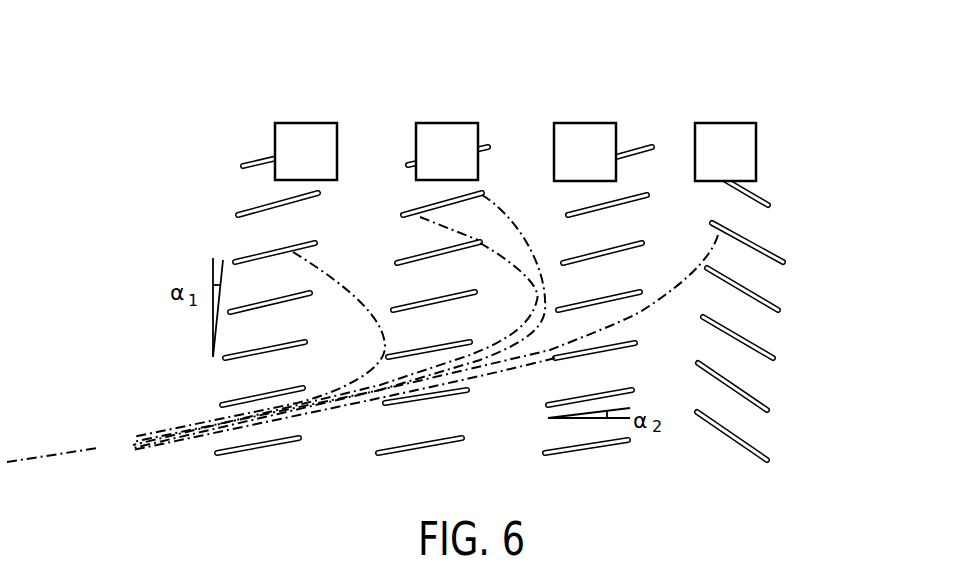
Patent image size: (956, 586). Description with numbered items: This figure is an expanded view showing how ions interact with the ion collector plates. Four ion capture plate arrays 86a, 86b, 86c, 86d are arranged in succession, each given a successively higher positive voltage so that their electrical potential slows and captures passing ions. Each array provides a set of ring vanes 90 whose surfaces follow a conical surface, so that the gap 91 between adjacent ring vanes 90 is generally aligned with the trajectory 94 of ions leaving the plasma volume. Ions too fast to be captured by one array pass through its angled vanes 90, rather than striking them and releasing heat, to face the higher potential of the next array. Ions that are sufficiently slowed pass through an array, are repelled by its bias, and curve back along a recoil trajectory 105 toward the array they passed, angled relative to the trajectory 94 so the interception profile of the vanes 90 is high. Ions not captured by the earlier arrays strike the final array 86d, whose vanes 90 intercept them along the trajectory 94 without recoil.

The ion capture plate array 86a is at (302, 104).
The ion capture plate array 86b is at (441, 104).
The ion capture plate array 86c is at (586, 104).
The ion capture plate array 86d is at (724, 104).
The ring vanes 90 is at (264, 212).
The gap 91 is at (790, 265).
The recoil trajectory 105 is at (340, 278).
The trajectory 94 is at (50, 455).